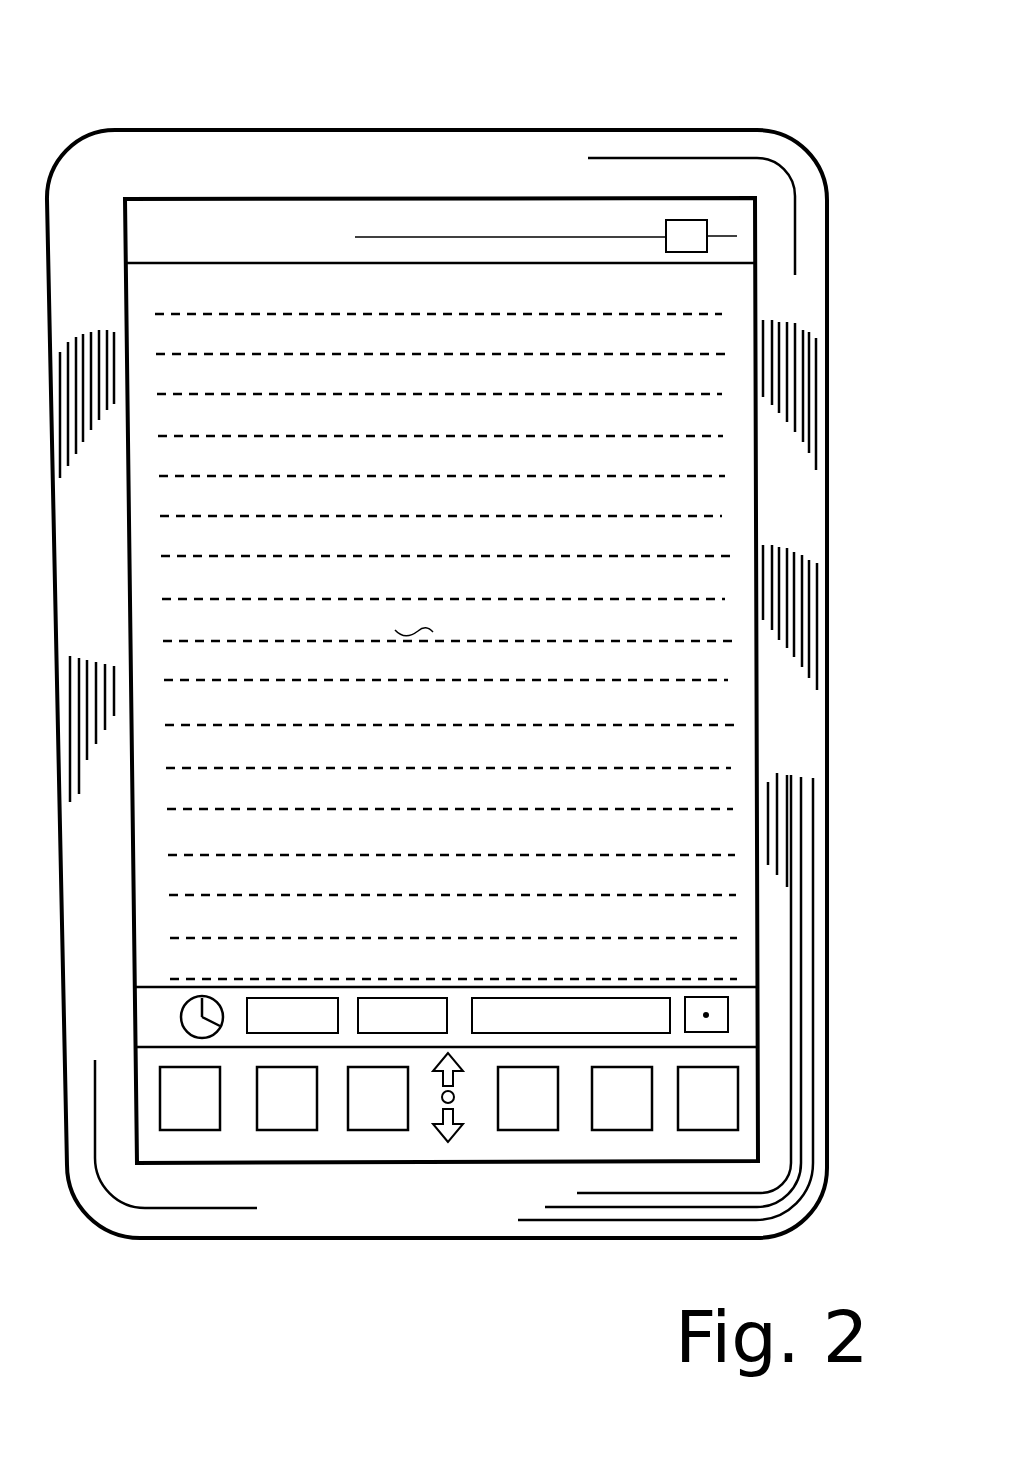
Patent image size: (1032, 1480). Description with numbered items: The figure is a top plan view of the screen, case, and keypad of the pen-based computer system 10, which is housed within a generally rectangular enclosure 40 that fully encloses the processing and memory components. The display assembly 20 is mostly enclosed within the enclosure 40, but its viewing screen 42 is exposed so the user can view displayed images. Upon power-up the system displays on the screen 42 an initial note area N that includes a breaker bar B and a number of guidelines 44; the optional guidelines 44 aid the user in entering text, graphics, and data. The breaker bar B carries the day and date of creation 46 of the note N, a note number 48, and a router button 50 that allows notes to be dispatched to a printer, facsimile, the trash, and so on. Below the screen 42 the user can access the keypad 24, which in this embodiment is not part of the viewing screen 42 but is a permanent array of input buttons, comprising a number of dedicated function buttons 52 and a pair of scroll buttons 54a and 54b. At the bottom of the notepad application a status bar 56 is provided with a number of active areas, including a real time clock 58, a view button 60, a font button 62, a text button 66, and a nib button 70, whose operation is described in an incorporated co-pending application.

The pen-based computer system 10 is at (765, 80).
The display assembly 20 is at (657, 578).
The keypad 24 is at (737, 1150).
The enclosure 40 is at (778, 515).
The viewing screen 42 is at (670, 698).
The guidelines 44 is at (690, 432).
The day and date of creation 46 is at (222, 212).
The note number 48 is at (325, 215).
The router button 50 is at (678, 212).
The dedicated function buttons 52 is at (202, 1102).
The scroll button 54a is at (436, 1068).
The scroll button 54b is at (455, 1127).
The status bar 56 is at (745, 1018).
The real time clock 58 is at (214, 1003).
The view button 60 is at (293, 1000).
The font button 62 is at (387, 1000).
The text button 66 is at (565, 1000).
The nib button 70 is at (695, 1000).
The breaker bar B is at (373, 228).
The note area N is at (414, 621).